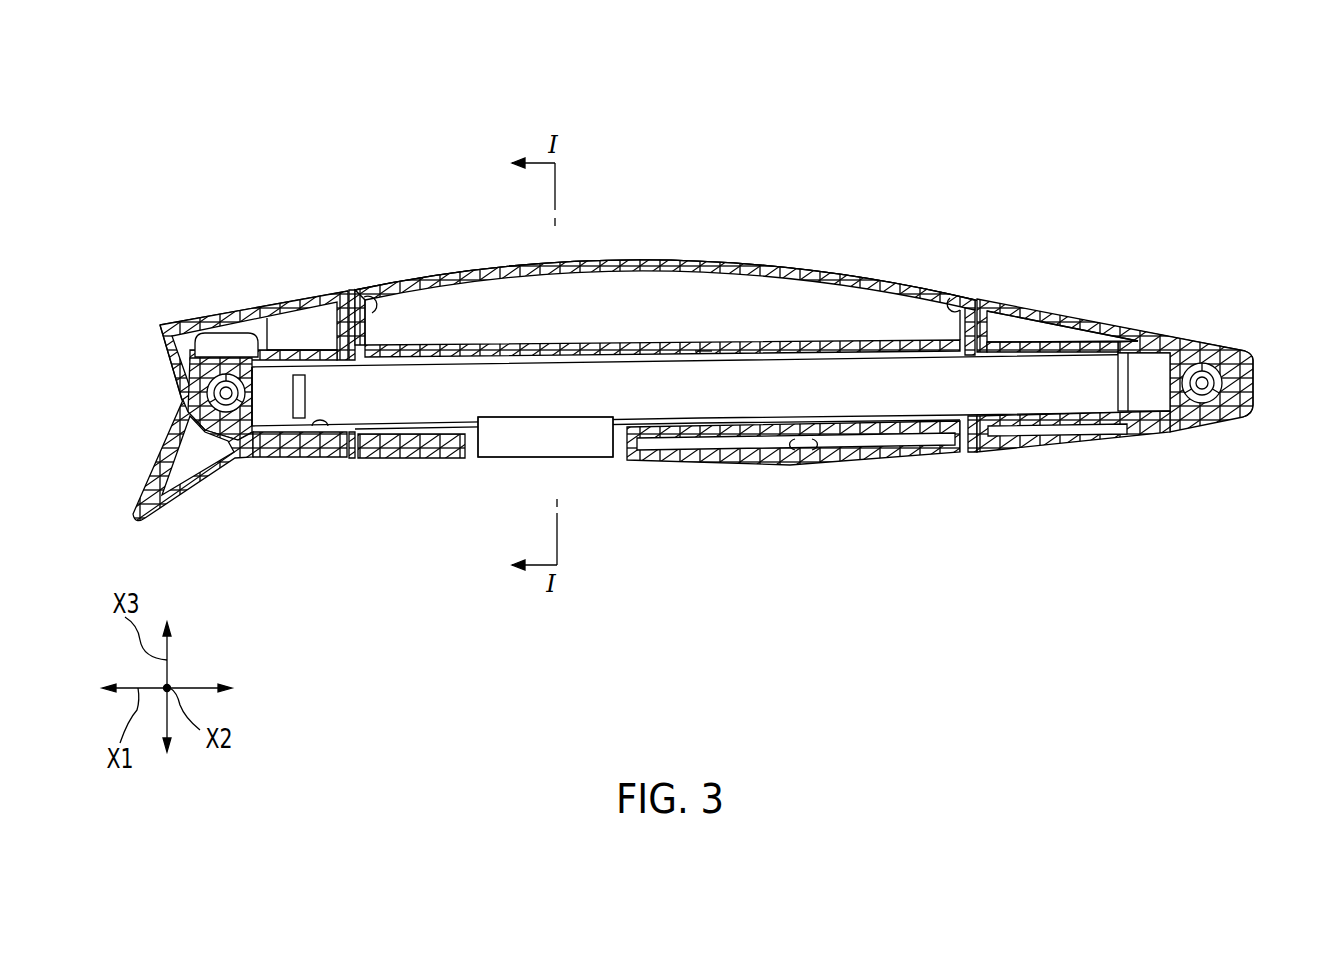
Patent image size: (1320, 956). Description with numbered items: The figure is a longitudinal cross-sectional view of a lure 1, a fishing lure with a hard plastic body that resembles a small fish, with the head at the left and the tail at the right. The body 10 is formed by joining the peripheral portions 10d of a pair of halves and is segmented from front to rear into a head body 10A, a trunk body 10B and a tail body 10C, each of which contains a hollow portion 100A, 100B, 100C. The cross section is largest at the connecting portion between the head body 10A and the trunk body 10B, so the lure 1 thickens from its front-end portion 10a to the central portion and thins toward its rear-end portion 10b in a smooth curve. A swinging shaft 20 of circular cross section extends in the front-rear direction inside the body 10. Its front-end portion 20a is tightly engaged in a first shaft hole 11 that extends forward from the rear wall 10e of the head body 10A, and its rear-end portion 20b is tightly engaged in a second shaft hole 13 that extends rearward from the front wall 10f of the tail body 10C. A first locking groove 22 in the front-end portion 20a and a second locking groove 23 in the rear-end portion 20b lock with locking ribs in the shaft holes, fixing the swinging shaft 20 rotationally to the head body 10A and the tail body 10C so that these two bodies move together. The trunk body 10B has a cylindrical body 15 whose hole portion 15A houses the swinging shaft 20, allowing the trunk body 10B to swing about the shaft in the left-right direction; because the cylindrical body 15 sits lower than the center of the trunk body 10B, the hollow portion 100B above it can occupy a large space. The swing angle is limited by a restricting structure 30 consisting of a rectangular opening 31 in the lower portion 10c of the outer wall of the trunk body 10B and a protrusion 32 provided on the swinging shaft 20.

The lure 1 is at (365, 175).
The body 10 is at (678, 285).
The head body 10A is at (245, 300).
The trunk body 10B is at (636, 257).
The tail body 10C is at (1105, 323).
The front-end portion 10a is at (160, 348).
The rear-end portion 10b is at (1250, 360).
The lower portion 10c is at (648, 460).
The peripheral portions 10d is at (810, 258).
The rear wall 10e is at (362, 322).
The front wall 10f is at (962, 320).
The hollow portion 100A is at (292, 328).
The hollow portion 100B is at (607, 311).
The hollow portion 100C is at (1034, 320).
The first shaft hole 11 is at (320, 428).
The second shaft hole 13 is at (1020, 408).
The cylindrical body 15 is at (512, 346).
The hole portion 15A is at (704, 368).
The swinging shaft 20 is at (798, 380).
The front-end portion 20a is at (278, 410).
The rear-end portion 20b is at (1152, 395).
The first locking groove 22 is at (300, 388).
The second locking groove 23 is at (1122, 377).
The restricting structure 30 is at (588, 472).
The opening 31 is at (470, 452).
The protrusion 32 is at (535, 452).